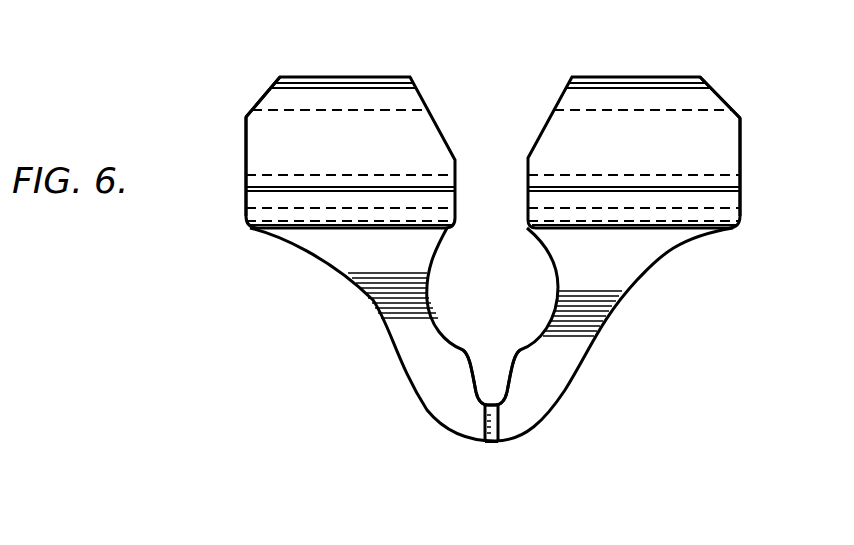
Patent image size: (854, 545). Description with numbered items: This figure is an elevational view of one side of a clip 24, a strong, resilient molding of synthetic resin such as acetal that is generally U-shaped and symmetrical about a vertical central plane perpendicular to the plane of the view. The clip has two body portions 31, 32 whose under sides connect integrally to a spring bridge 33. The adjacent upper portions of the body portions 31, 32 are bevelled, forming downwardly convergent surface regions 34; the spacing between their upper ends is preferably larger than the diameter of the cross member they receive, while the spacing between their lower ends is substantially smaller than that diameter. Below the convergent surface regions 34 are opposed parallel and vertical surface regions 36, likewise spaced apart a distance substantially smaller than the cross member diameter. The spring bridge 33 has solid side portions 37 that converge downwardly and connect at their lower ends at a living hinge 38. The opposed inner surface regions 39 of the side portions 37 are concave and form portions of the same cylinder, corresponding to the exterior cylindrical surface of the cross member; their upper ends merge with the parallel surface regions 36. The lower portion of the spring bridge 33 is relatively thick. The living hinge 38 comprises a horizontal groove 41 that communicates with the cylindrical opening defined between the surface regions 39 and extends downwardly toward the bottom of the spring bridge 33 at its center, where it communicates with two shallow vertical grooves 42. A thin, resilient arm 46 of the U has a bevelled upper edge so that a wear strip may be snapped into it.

The clip 24 is at (493, 257).
The body portion 31 is at (744, 192).
The body portion 32 is at (251, 223).
The spring bridge 33 is at (491, 359).
The downwardly convergent surface regions 34 is at (550, 103).
The parallel vertical surface regions 36 is at (527, 182).
The side portions 37 is at (397, 337).
The living hinge 38 is at (486, 445).
The inner surface regions 39 is at (430, 317).
The horizontal groove 41 is at (507, 375).
The vertical grooves 42 is at (498, 424).
The arm 46 is at (240, 170).